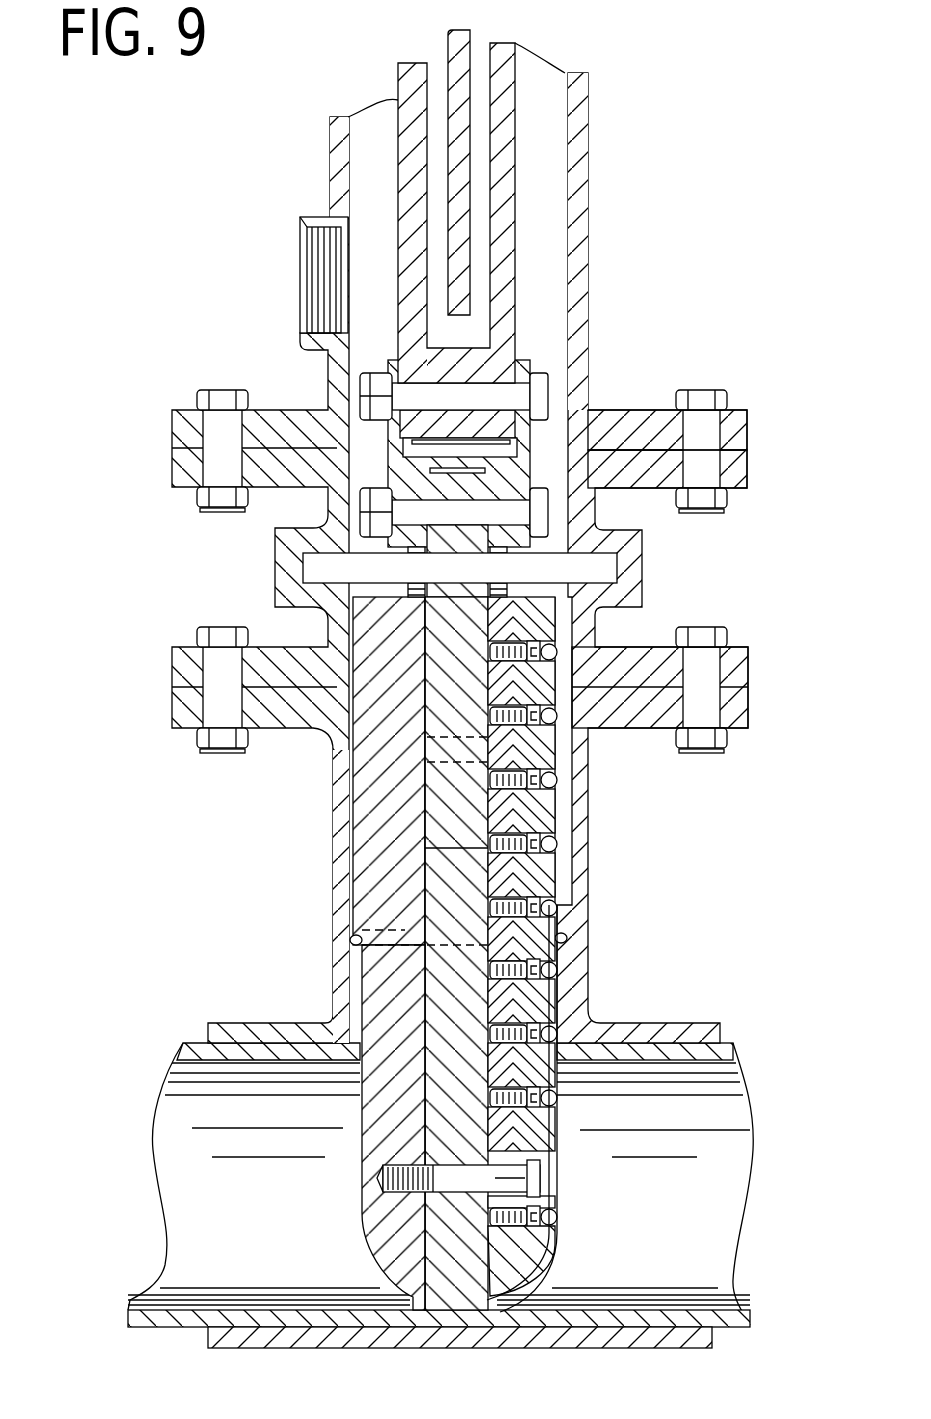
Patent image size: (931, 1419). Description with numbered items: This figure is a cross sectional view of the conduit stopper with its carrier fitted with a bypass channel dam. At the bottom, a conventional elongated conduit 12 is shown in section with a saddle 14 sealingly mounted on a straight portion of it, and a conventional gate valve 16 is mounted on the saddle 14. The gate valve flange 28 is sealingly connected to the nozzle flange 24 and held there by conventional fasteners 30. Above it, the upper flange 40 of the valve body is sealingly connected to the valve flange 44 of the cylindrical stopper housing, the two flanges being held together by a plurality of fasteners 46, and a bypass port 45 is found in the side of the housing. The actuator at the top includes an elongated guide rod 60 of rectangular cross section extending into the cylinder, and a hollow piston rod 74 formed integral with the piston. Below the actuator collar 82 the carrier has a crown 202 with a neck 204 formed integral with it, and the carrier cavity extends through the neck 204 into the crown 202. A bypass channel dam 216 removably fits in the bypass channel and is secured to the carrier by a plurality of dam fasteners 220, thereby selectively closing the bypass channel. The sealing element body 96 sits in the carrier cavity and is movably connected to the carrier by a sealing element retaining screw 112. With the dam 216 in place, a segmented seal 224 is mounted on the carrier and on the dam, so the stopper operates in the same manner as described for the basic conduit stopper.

The conduit 12 is at (723, 1047).
The saddle 14 is at (606, 1016).
The gate valve 16 is at (646, 567).
The nozzle flange 24 is at (737, 707).
The gate valve flange 28 is at (735, 670).
The fasteners 30 is at (223, 738).
The upper flange 40 is at (740, 473).
The valve flange 44 is at (740, 440).
The bypass port 45 is at (323, 295).
The fasteners 46 is at (703, 392).
The guide rod 60 is at (462, 242).
The hollow piston rod 74 is at (502, 157).
The actuator collar 82 is at (518, 477).
The sealing element body 96 is at (420, 1122).
The sealing element retaining screw 112 is at (542, 1167).
The crown 202 is at (370, 792).
The neck 204 is at (375, 990).
The bypass channel dam 216 is at (535, 1005).
The dam fasteners 220 is at (545, 903).
The segmented seal 224 is at (350, 938).